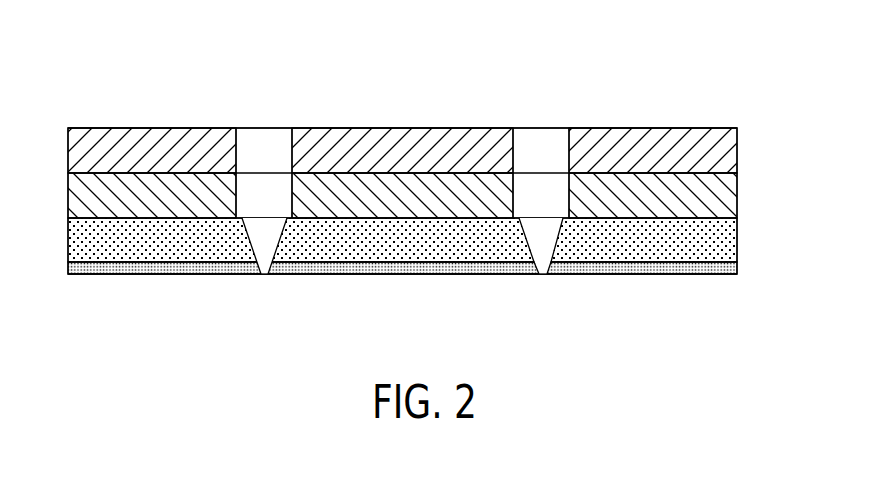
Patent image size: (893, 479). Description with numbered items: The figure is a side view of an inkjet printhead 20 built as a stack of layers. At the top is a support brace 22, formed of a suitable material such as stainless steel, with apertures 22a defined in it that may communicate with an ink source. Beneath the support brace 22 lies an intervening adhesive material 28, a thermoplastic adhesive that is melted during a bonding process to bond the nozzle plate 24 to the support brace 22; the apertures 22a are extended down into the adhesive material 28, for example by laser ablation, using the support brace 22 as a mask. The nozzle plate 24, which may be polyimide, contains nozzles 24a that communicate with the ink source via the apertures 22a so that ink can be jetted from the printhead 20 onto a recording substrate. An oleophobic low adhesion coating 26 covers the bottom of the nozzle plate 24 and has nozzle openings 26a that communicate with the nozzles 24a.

The inkjet printhead 20 is at (699, 68).
The support brace 22 is at (723, 152).
The apertures 22a is at (545, 146).
The adhesive material 28 is at (723, 197).
The nozzle plate 24 is at (723, 240).
The nozzles 24a is at (536, 245).
The oleophobic low adhesion coating 26 is at (723, 267).
The nozzle openings 26a is at (545, 279).